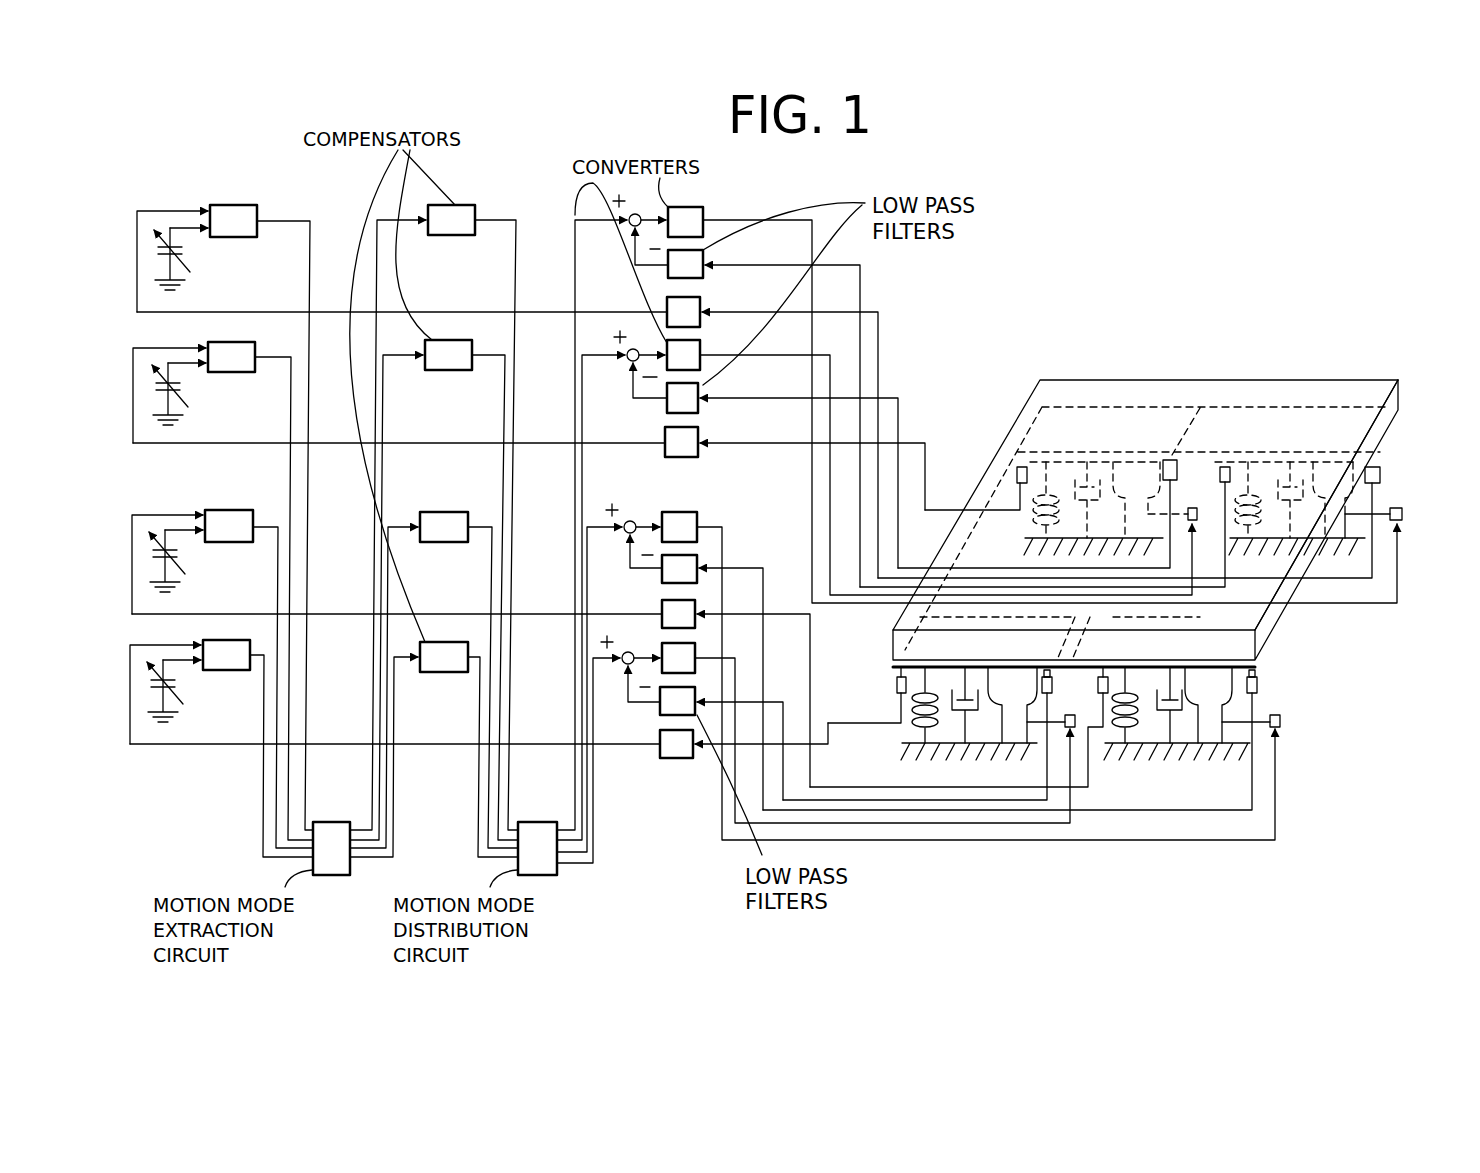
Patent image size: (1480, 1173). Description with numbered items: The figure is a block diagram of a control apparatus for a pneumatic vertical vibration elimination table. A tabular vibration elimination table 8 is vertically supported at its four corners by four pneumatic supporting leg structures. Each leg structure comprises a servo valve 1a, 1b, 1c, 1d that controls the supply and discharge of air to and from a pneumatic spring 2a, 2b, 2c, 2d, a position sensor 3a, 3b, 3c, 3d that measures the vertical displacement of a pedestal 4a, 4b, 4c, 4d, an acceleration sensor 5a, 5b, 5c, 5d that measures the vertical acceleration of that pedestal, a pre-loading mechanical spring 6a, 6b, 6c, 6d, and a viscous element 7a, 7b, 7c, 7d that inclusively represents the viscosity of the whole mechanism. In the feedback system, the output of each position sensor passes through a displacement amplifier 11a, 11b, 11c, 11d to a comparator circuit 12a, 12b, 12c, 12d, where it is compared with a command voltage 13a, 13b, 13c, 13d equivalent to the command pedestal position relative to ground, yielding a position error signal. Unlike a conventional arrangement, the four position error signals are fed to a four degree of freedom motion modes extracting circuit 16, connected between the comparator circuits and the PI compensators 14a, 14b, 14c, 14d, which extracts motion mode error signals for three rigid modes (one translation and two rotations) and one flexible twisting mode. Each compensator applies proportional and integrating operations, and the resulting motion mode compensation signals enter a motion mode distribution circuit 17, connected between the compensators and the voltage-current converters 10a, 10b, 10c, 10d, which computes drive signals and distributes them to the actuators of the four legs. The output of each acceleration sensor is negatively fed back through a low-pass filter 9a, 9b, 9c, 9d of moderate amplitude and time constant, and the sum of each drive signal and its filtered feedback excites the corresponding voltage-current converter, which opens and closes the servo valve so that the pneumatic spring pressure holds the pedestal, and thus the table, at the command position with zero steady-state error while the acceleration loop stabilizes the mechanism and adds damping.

The servo valve 1a is at (1077, 728).
The servo valve 1b is at (1284, 722).
The servo valve 1c is at (1404, 514).
The servo valve 1d is at (1197, 505).
The pneumatic spring 2a is at (905, 662).
The pneumatic spring 2b is at (1230, 738).
The pneumatic spring 2c is at (1325, 483).
The pneumatic spring 2d is at (1128, 457).
The position sensor 3a is at (912, 700).
The position sensor 3b is at (1108, 747).
The position sensor 3c is at (1213, 457).
The position sensor 3d is at (1035, 483).
The pedestal 4a is at (893, 680).
The pedestal 4b is at (1257, 650).
The pedestal 4c is at (1400, 425).
The pedestal 4d is at (1012, 452).
The acceleration sensor 5a is at (1003, 690).
The acceleration sensor 5b is at (1262, 683).
The acceleration sensor 5c is at (1382, 477).
The acceleration sensor 5d is at (1172, 443).
The pre-loading mechanical spring 6a is at (895, 745).
The pre-loading mechanical spring 6b is at (1125, 760).
The pre-loading mechanical spring 6c is at (1260, 457).
The pre-loading mechanical spring 6d is at (1060, 483).
The viscous element 7a is at (960, 746).
The viscous element 7b is at (1262, 693).
The viscous element 7c is at (1308, 440).
The viscous element 7d is at (1102, 470).
The vibration elimination table 8 is at (1362, 378).
The low-pass filter 9a is at (660, 715).
The low-pass filter 9b is at (697, 558).
The low-pass filter 9c is at (703, 252).
The low-pass filter 9d is at (698, 387).
The voltage-current converter 10a is at (695, 648).
The voltage-current converter 10b is at (697, 514).
The voltage-current converter 10c is at (705, 212).
The voltage-current converter 10d is at (700, 345).
The displacement amplifier 11a is at (676, 760).
The displacement amplifier 11b is at (695, 602).
The displacement amplifier 11c is at (700, 300).
The displacement amplifier 11d is at (698, 430).
The comparator circuit 12a is at (203, 645).
The comparator circuit 12b is at (205, 512).
The comparator circuit 12c is at (262, 240).
The comparator circuit 12d is at (206, 345).
The command voltage 13a is at (180, 683).
The command voltage 13b is at (182, 553).
The command voltage 13c is at (187, 250).
The command voltage 13d is at (185, 386).
The PI compensator 14a is at (440, 674).
The PI compensator 14b is at (468, 515).
The PI compensator 14c is at (454, 238).
The PI compensator 14d is at (472, 346).
The motion modes extracting circuit 16 is at (340, 878).
The motion mode distribution circuit 17 is at (552, 878).